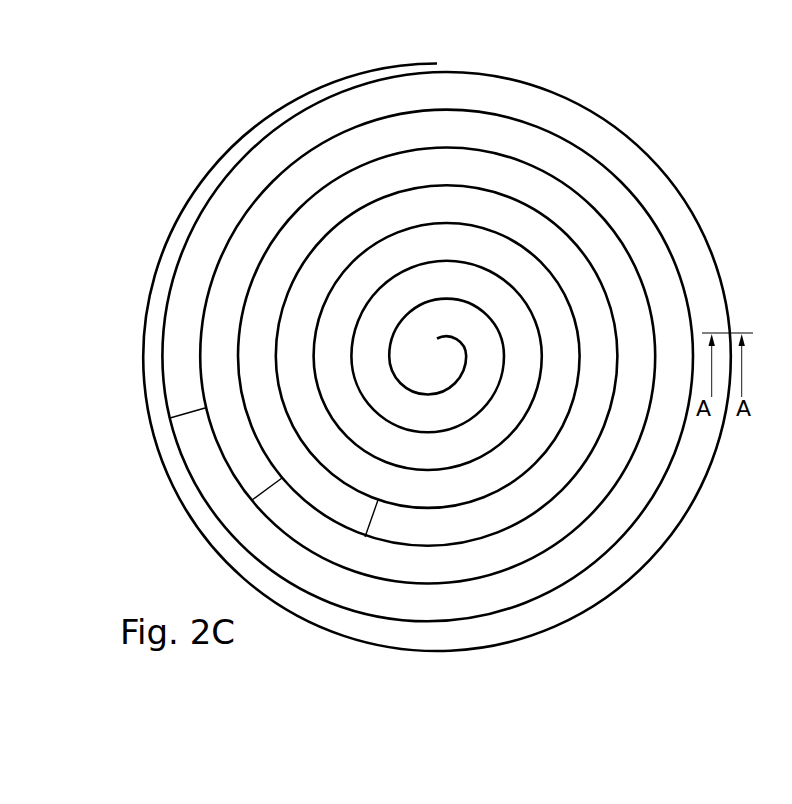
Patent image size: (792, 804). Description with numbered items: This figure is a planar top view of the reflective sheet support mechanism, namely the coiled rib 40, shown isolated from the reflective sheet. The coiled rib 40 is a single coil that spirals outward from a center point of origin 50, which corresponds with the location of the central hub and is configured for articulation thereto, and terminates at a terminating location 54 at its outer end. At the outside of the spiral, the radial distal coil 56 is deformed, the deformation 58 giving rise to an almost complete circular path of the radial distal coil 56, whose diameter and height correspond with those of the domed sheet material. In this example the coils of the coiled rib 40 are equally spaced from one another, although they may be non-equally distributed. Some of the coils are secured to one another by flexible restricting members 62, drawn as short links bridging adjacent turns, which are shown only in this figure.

The coiled rib 40 is at (665, 570).
The center point of origin 50 is at (437, 338).
The terminating location 54 is at (437, 64).
The radial distal coil 56 is at (198, 189).
The deformation 58 is at (443, 70).
The flexible restricting members 62 is at (372, 518).